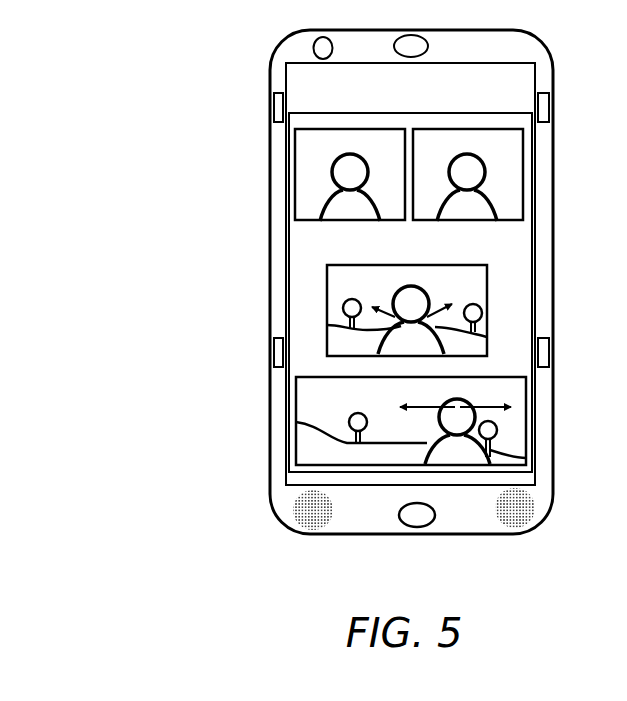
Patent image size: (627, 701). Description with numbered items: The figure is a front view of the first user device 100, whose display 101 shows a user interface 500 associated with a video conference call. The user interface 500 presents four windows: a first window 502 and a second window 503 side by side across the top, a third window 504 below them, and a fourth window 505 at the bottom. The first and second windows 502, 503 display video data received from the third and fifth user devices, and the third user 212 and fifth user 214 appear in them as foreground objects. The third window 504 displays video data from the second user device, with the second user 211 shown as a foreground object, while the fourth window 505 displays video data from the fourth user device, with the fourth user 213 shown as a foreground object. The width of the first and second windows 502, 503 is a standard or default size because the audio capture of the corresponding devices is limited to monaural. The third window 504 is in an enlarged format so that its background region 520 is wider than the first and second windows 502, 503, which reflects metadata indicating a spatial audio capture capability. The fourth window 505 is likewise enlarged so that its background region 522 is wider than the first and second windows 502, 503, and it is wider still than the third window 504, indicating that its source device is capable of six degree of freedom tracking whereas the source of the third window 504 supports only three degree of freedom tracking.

The first user device 100 is at (262, 202).
The display 101 is at (410, 274).
The user interface 500 is at (330, 111).
The first window 502 is at (294, 163).
The second window 503 is at (522, 170).
The third window 504 is at (327, 313).
The fourth window 505 is at (296, 410).
The second user 211 is at (411, 320).
The third user 212 is at (350, 187).
The fourth user 213 is at (457, 431).
The fifth user 214 is at (467, 187).
The background region 520 is at (407, 302).
The background region 522 is at (411, 420).